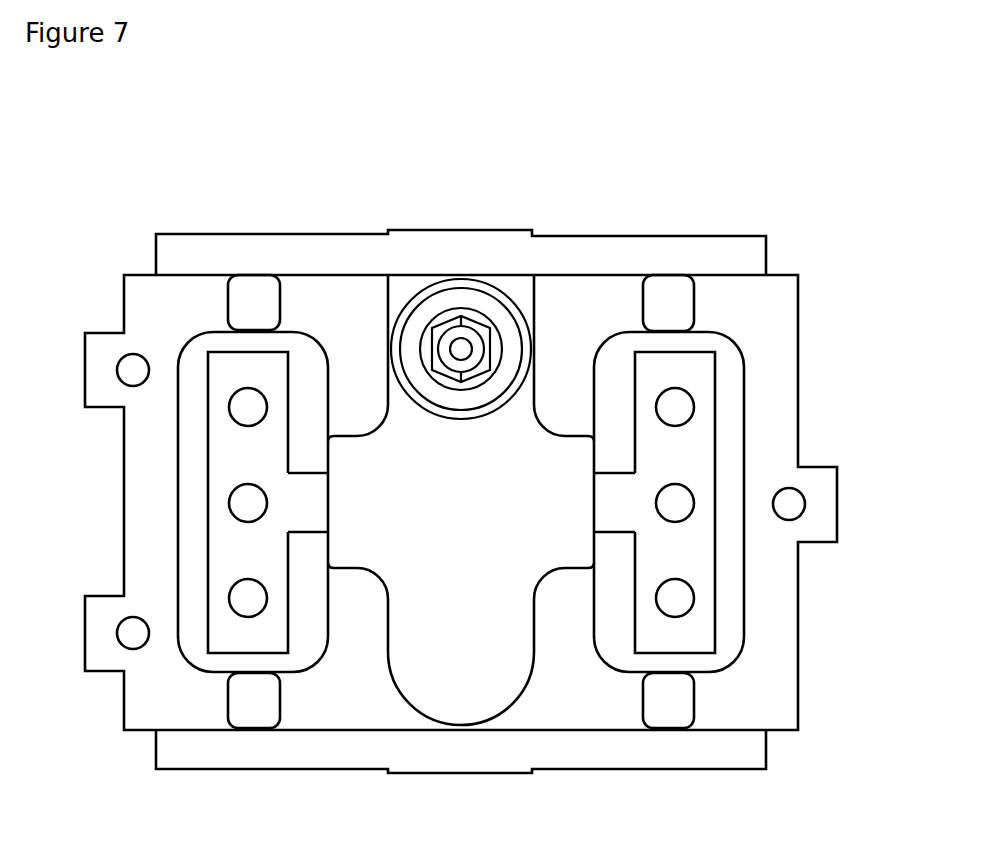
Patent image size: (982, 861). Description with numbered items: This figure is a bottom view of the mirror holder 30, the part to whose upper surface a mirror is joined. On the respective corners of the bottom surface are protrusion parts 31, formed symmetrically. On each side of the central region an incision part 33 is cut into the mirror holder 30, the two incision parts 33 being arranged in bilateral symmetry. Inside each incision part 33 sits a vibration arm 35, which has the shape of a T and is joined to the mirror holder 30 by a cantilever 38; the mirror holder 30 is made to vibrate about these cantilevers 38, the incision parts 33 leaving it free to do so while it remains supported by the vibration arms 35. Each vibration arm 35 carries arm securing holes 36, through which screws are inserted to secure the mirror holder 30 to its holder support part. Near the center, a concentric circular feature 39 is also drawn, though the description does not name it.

The mirror holder 30 is at (773, 165).
The protrusion parts 31 is at (250, 293).
The incision parts 33 is at (195, 645).
The vibration arm 35 is at (222, 522).
The arm securing holes 36 is at (242, 405).
The cantilever 38 is at (310, 513).
The concentric boss with nut 39 is at (459, 340).